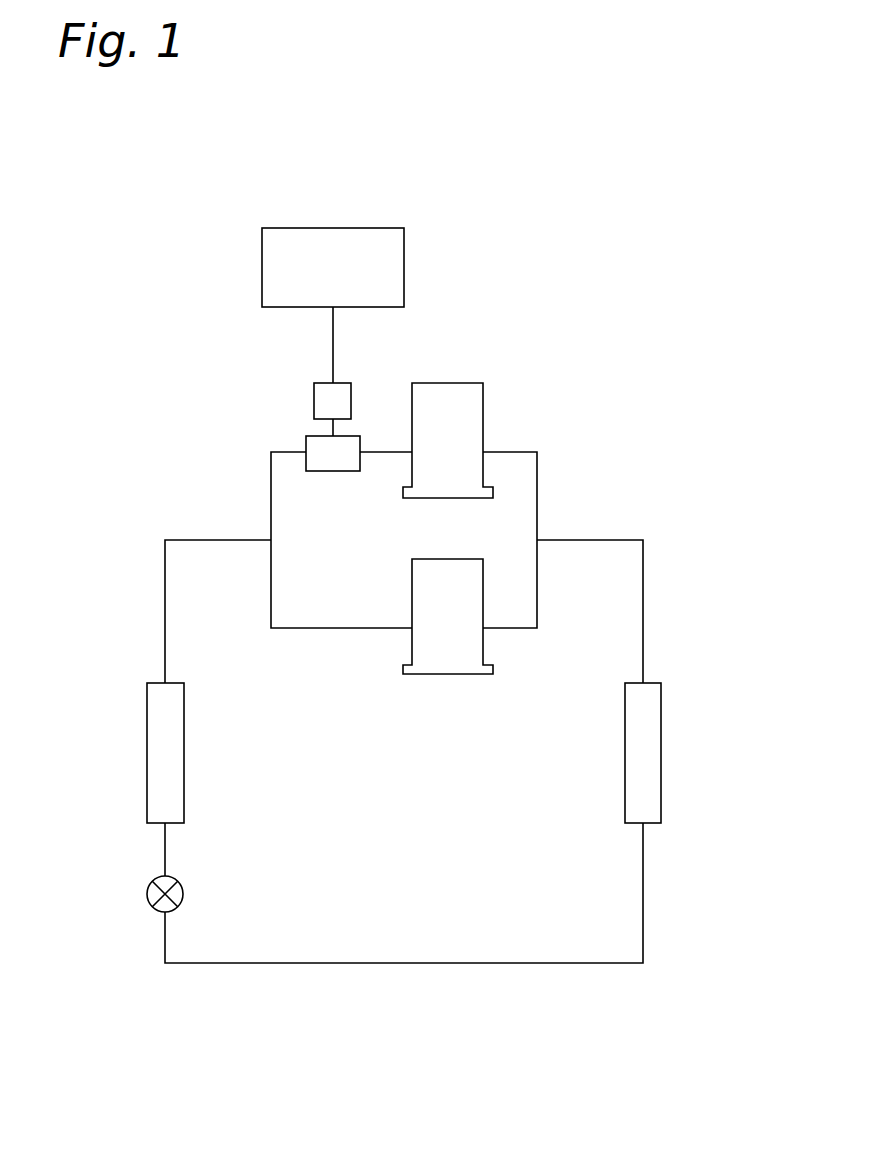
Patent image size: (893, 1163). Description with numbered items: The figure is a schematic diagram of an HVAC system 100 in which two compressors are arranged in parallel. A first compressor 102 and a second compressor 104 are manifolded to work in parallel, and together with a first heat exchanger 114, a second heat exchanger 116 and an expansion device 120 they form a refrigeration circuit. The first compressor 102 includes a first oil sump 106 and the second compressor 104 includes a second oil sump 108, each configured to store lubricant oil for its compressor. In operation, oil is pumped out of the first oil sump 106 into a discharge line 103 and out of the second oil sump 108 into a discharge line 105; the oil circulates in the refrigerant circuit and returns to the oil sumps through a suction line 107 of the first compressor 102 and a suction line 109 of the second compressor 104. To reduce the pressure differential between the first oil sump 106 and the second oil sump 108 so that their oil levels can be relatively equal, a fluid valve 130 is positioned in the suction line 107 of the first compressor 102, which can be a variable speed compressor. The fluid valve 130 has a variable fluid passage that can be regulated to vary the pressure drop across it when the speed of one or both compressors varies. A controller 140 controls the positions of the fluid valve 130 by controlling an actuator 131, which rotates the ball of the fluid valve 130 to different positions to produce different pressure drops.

The HVAC system 100 is at (590, 262).
The first compressor 102 is at (473, 382).
The discharge line 103 is at (522, 452).
The second compressor 104 is at (424, 557).
The discharge line 105 is at (510, 630).
The first oil sump 106 is at (465, 418).
The suction line 107 is at (386, 455).
The second oil sump 108 is at (426, 600).
The suction line 109 is at (333, 630).
The first heat exchanger 114 is at (147, 715).
The second heat exchanger 116 is at (661, 712).
The expansion device 120 is at (147, 880).
The fluid valve 130 is at (313, 434).
The actuator 131 is at (322, 382).
The controller 140 is at (295, 227).